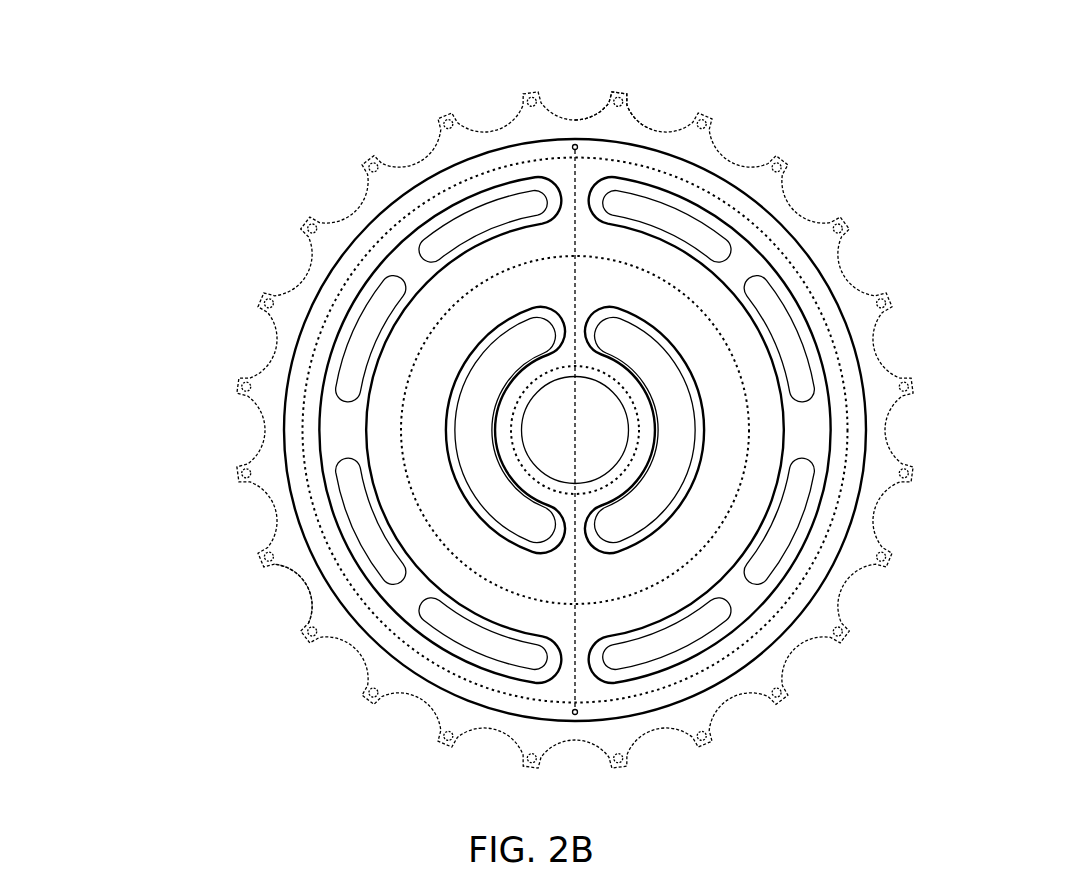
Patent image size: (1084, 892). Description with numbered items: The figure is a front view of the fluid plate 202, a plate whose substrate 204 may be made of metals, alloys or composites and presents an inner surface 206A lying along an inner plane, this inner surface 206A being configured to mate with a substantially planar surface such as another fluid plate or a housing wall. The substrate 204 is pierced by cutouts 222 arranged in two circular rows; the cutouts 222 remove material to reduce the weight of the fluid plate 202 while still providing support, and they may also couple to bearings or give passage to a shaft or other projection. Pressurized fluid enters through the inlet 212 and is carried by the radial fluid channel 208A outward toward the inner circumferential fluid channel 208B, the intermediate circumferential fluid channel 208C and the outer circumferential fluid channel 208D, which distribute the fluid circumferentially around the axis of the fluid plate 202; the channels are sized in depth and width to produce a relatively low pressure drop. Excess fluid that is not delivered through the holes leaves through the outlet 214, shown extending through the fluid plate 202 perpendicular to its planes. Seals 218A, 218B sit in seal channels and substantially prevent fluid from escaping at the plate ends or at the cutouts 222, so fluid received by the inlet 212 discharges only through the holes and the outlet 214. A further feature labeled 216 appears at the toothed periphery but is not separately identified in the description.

The fluid plate 202 is at (316, 127).
The substrate 204 is at (260, 487).
The inner surface 206A is at (312, 587).
The radial fluid channel 208A is at (575, 166).
The inner circumferential fluid channel 208B is at (510, 423).
The intermediate circumferential fluid channel 208C is at (405, 450).
The outer circumferential fluid channel 208D is at (450, 187).
The inlet 212 is at (575, 145).
The outlet 214 is at (575, 710).
The tooth 216 is at (620, 103).
The seal 218A is at (838, 290).
The seal 218B is at (640, 318).
The cutout 222 is at (415, 627).